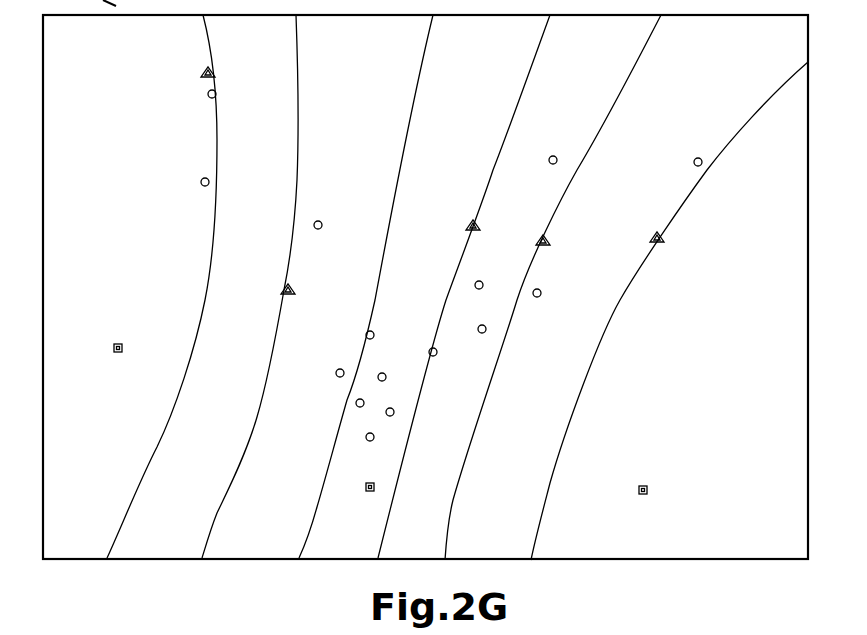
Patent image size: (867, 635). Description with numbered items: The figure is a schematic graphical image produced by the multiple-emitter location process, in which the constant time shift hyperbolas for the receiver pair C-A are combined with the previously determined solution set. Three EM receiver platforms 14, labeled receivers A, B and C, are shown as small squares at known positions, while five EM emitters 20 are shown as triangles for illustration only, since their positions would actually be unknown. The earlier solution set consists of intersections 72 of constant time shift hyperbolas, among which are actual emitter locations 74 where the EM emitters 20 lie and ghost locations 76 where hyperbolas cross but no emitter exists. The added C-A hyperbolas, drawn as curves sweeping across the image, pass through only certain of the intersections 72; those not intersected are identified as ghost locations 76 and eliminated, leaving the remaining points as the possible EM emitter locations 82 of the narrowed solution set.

The EM receiver platform 14 is at (114, 348).
The EM emitter 20 is at (214, 70).
The intersection 72 is at (418, 255).
The actual emitter location 74 is at (215, 74).
The ghost location 76 is at (315, 222).
The possible EM emitter location 82 is at (209, 95).